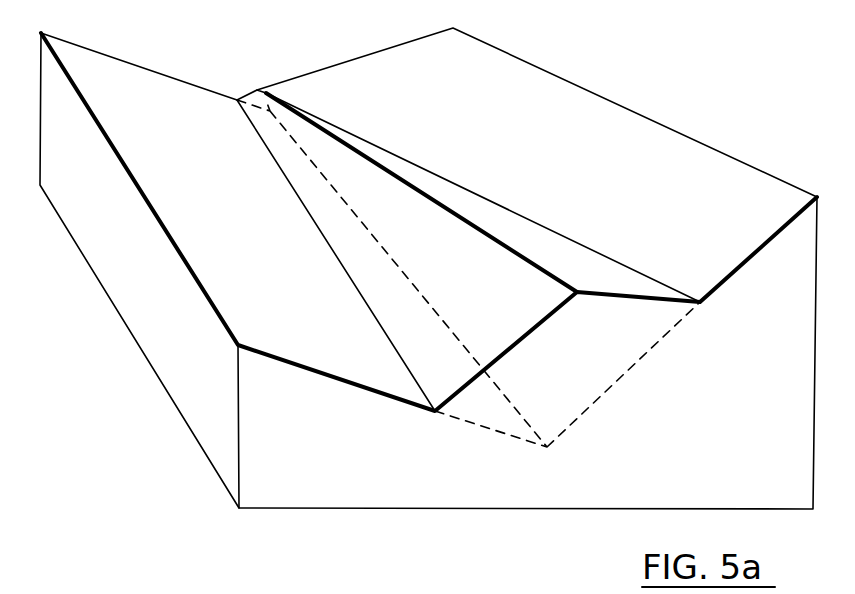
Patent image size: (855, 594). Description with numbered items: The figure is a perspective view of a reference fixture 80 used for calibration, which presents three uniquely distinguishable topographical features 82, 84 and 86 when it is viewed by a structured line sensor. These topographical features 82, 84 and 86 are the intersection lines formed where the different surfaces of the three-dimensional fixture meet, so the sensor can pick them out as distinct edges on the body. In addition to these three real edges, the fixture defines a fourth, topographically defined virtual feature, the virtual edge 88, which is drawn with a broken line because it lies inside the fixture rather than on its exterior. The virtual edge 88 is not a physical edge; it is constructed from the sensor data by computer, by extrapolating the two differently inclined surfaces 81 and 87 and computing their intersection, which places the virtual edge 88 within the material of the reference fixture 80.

The reference fixture 80 is at (742, 130).
The surface 81 is at (233, 218).
The topographical feature 82 is at (345, 270).
The topographical feature 84 is at (497, 237).
The topographical feature 86 is at (593, 248).
The surface 87 is at (463, 118).
The virtual edge 88 is at (445, 320).